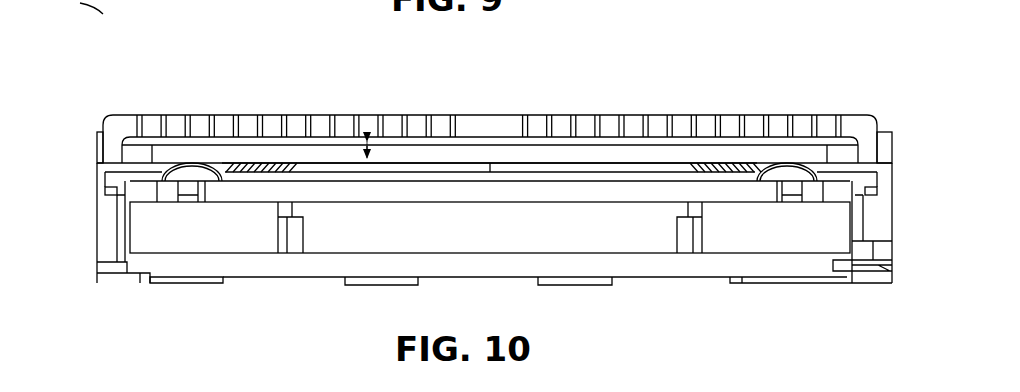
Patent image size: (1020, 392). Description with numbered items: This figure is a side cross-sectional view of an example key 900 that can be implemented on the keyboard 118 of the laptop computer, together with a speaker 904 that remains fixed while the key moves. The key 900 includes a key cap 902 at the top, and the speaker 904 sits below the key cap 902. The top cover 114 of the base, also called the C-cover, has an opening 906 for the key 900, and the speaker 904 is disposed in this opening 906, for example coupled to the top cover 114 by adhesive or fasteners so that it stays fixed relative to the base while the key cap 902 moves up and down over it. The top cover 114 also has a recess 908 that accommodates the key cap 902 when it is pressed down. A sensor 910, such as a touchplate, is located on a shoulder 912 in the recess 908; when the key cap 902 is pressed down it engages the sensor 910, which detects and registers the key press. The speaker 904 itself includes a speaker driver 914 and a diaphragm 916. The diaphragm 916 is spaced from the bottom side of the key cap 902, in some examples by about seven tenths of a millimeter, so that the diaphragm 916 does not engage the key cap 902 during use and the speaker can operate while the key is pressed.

In FIG. 9, the keyboard 118 is at (104, 18).
In FIG. 10, the key 900 is at (123, 86).
In FIG. 10, the key cap 902 is at (254, 124).
In FIG. 10, the speaker 904 is at (116, 214).
In FIG. 10, the opening 906 is at (868, 213).
In FIG. 10, the recess 908 is at (882, 175).
In FIG. 10, the sensor 910 is at (879, 190).
In FIG. 10, the shoulder 912 is at (873, 195).
In FIG. 10, the speaker driver 914 is at (215, 265).
In FIG. 10, the diaphragm 916 is at (193, 170).
In FIG. 10, the top cover 114 is at (893, 140).